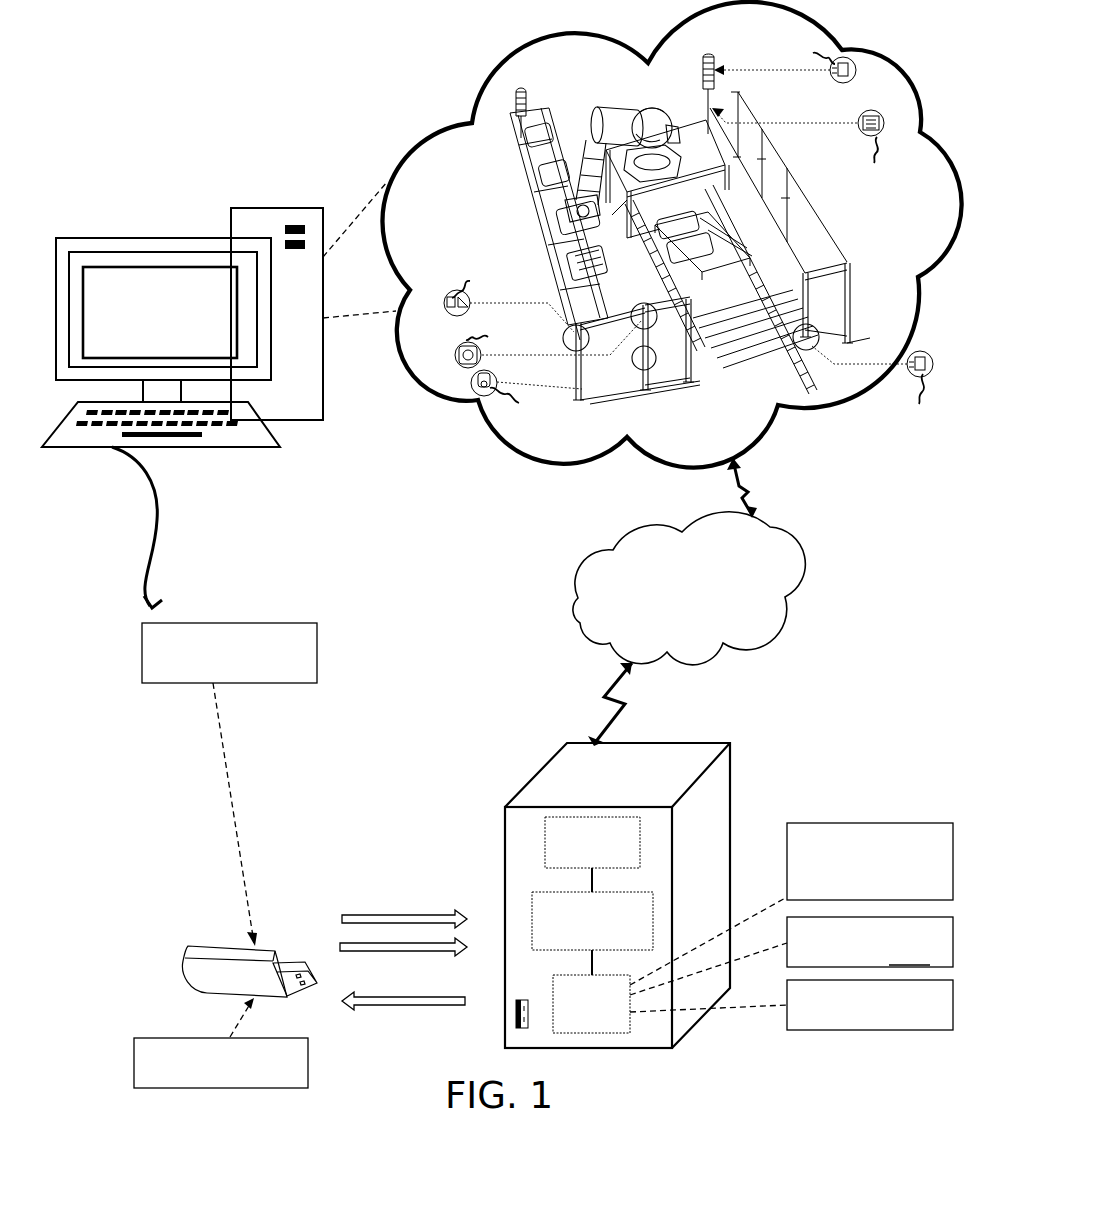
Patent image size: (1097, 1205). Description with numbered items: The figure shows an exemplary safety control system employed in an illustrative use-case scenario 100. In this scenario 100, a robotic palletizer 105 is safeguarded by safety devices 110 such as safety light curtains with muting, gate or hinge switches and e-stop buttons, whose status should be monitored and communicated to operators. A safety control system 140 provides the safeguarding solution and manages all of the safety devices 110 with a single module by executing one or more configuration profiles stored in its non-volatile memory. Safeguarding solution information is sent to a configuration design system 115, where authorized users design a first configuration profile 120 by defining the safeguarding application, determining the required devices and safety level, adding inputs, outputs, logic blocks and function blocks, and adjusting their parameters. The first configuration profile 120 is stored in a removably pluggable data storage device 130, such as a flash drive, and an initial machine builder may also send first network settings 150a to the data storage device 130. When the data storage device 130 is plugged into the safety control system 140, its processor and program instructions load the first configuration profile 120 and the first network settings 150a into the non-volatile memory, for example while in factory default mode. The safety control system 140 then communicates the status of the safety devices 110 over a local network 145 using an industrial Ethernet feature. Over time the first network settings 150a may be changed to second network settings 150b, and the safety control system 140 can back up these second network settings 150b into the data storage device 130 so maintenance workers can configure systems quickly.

The scenario 100 is at (481, 90).
The robotic palletizer 105 is at (611, 107).
The safety devices 110 is at (766, 370).
The configuration design system 115 is at (178, 347).
The first configuration profile 120 is at (244, 623).
The data storage device 130 is at (207, 942).
The safety control system 140 is at (504, 825).
The local network 145 is at (705, 610).
The first network settings 150a is at (134, 1065).
The second network settings 150b is at (417, 1007).